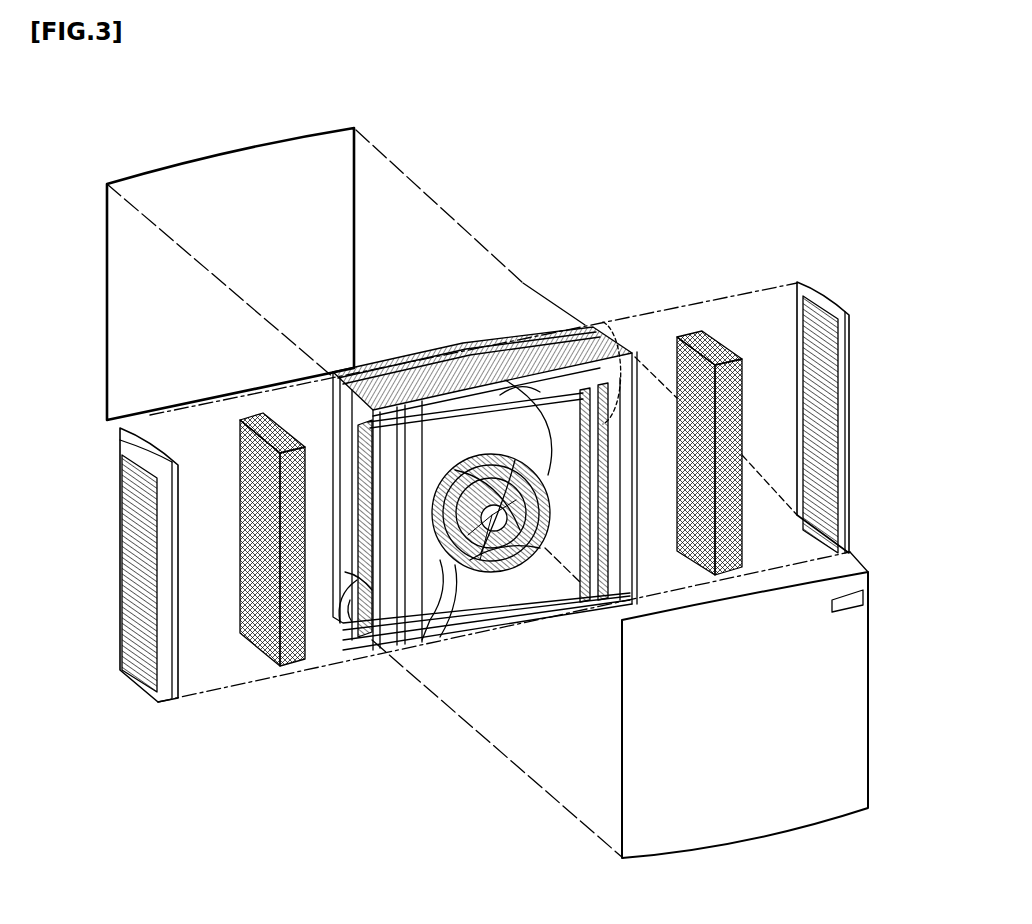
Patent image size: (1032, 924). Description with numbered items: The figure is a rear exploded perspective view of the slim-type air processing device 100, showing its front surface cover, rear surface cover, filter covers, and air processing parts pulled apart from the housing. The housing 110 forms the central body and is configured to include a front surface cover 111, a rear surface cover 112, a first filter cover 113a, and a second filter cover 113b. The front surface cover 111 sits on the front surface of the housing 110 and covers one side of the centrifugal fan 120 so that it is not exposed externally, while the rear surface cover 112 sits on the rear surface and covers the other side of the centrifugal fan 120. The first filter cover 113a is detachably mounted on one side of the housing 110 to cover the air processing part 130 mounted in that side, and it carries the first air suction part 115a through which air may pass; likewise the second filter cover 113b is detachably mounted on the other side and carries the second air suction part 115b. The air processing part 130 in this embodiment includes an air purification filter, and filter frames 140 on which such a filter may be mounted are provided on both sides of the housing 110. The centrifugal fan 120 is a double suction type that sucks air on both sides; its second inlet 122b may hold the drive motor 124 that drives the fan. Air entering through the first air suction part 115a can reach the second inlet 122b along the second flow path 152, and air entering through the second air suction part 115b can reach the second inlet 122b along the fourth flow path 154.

The slim-type air processing device 100 is at (658, 106).
The housing 110 is at (500, 514).
The front surface cover 111 is at (320, 152).
The rear surface cover 112 is at (762, 822).
The first filter cover 113a is at (858, 412).
The second filter cover 113b is at (104, 596).
The first air suction part 115a is at (835, 425).
The second air suction part 115b is at (120, 578).
The centrifugal fan 120 is at (477, 617).
The second inlet 122b is at (520, 338).
The drive motor 124 is at (482, 596).
The air processing part 130 is at (303, 668).
The filter frame 140 is at (363, 660).
The second flow path 152 is at (615, 330).
The fourth flow path 154 is at (408, 652).